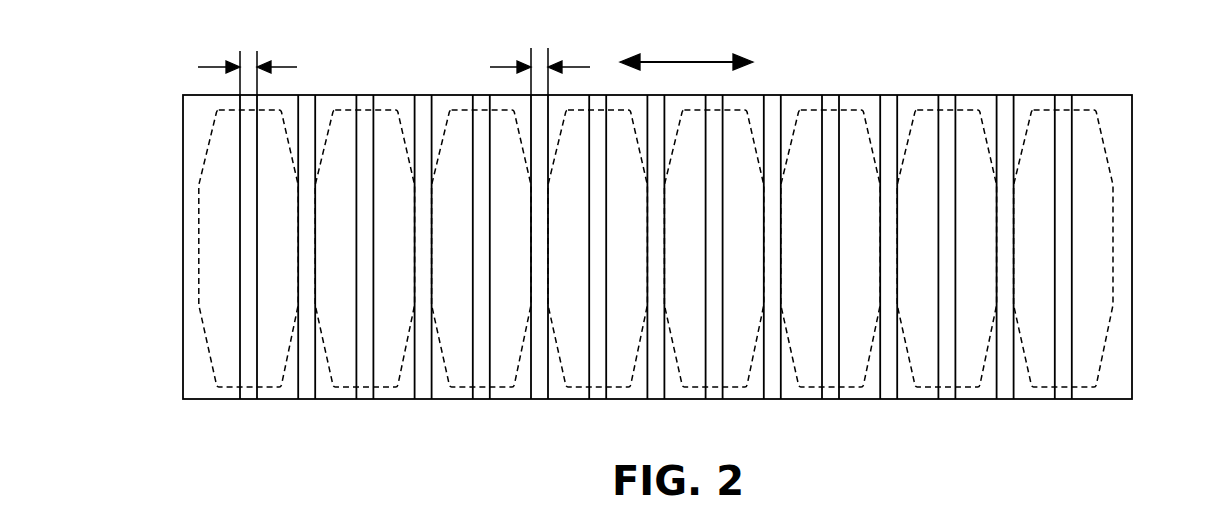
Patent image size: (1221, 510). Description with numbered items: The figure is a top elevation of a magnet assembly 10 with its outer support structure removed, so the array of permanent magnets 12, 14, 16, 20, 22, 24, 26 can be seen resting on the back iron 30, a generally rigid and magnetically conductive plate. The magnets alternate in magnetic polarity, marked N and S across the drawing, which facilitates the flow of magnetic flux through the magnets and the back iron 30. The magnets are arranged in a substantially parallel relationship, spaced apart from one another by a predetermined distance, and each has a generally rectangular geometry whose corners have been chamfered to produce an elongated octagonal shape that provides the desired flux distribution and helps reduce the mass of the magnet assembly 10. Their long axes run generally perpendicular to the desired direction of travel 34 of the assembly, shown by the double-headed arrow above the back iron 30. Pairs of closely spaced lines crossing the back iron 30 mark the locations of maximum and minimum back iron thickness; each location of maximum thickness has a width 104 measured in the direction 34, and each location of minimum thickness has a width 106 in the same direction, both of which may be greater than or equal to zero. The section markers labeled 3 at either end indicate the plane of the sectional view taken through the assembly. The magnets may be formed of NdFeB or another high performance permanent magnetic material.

The magnet assembly 10 is at (1130, 69).
The permanent magnet 12 is at (270, 388).
The permanent magnet 14 is at (385, 388).
The permanent magnet 16 is at (500, 388).
The permanent magnet 20 is at (730, 388).
The permanent magnet 22 is at (848, 388).
The permanent magnet 24 is at (965, 388).
The permanent magnet 26 is at (1082, 388).
The back iron 30 is at (975, 97).
The direction of travel 34 is at (683, 62).
The width 104 is at (502, 67).
The width 106 is at (297, 67).
The section line 3- 3 is at (167, 233).